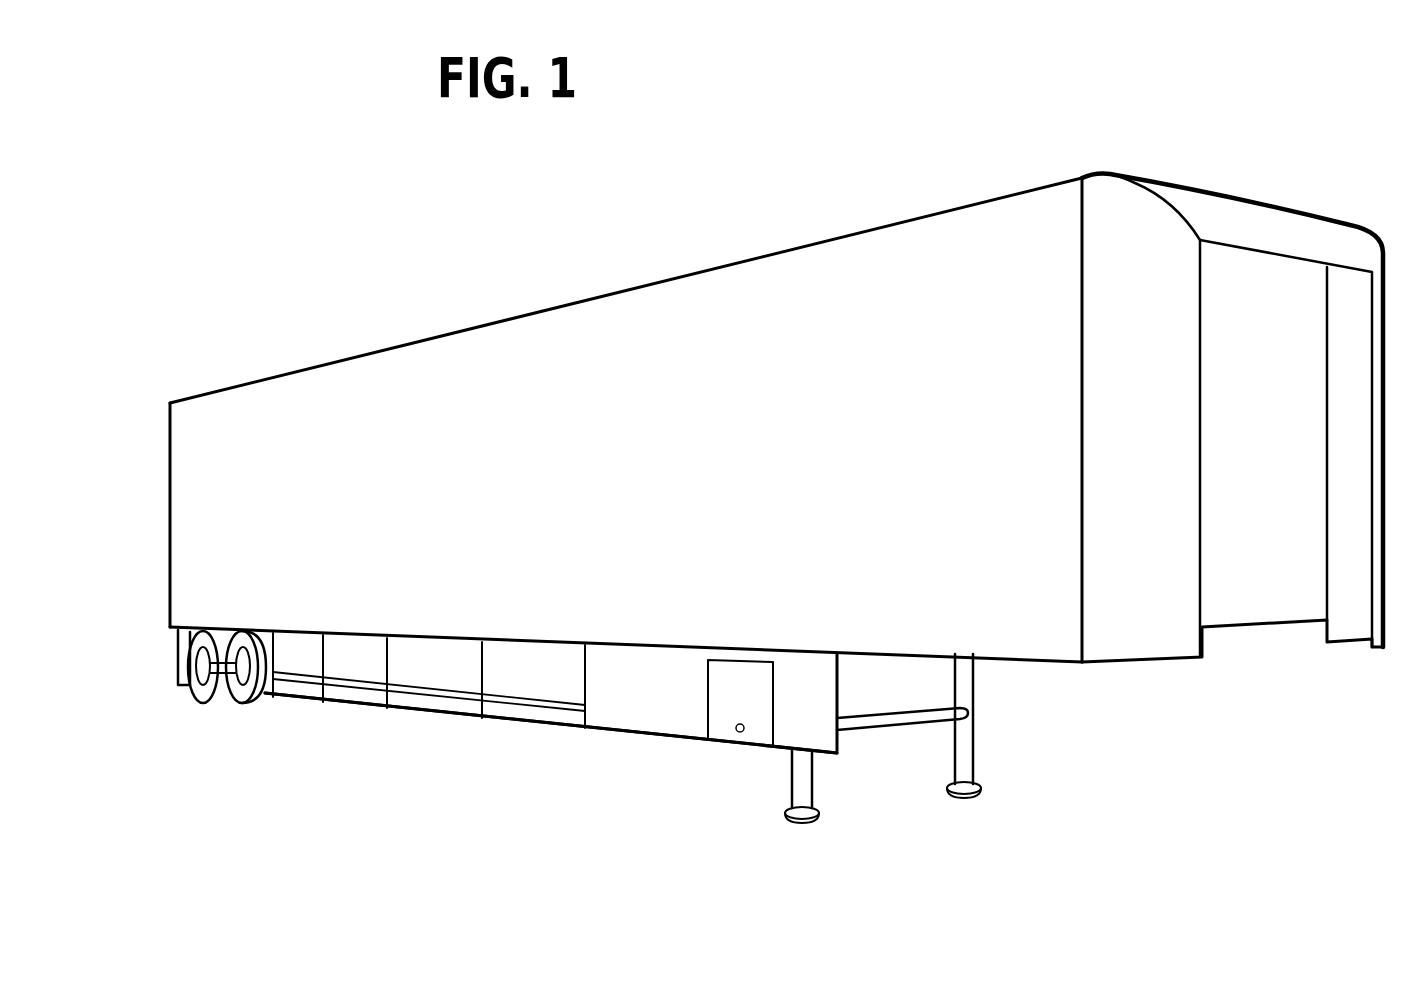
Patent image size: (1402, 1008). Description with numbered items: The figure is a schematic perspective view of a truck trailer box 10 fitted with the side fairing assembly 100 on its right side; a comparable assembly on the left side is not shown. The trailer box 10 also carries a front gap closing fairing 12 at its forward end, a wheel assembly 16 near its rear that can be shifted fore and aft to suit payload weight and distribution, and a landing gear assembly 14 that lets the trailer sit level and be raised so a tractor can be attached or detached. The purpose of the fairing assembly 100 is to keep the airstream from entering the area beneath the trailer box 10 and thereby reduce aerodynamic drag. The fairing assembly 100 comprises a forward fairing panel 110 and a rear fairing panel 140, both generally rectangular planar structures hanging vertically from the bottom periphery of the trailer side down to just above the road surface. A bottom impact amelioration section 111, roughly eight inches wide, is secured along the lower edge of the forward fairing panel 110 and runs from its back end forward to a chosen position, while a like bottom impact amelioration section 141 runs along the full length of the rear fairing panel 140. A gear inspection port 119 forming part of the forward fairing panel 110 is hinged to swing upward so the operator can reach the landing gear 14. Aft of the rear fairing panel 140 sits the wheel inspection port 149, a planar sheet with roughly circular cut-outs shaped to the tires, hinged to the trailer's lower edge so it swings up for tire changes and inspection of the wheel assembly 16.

The truck trailer box 10 is at (739, 423).
The front gap closing fairing 12 is at (1149, 423).
The landing gear assembly 14 is at (972, 695).
The wheel assembly 16 is at (197, 698).
The fairing assembly 100 is at (527, 740).
The forward fairing panel 110 is at (465, 650).
The bottom impact amelioration section 111 is at (448, 705).
The gear inspection port 119 is at (723, 723).
The rear fairing panel 140 is at (307, 645).
The bottom impact amelioration section 141 is at (312, 695).
The wheel inspection port 149 is at (178, 634).